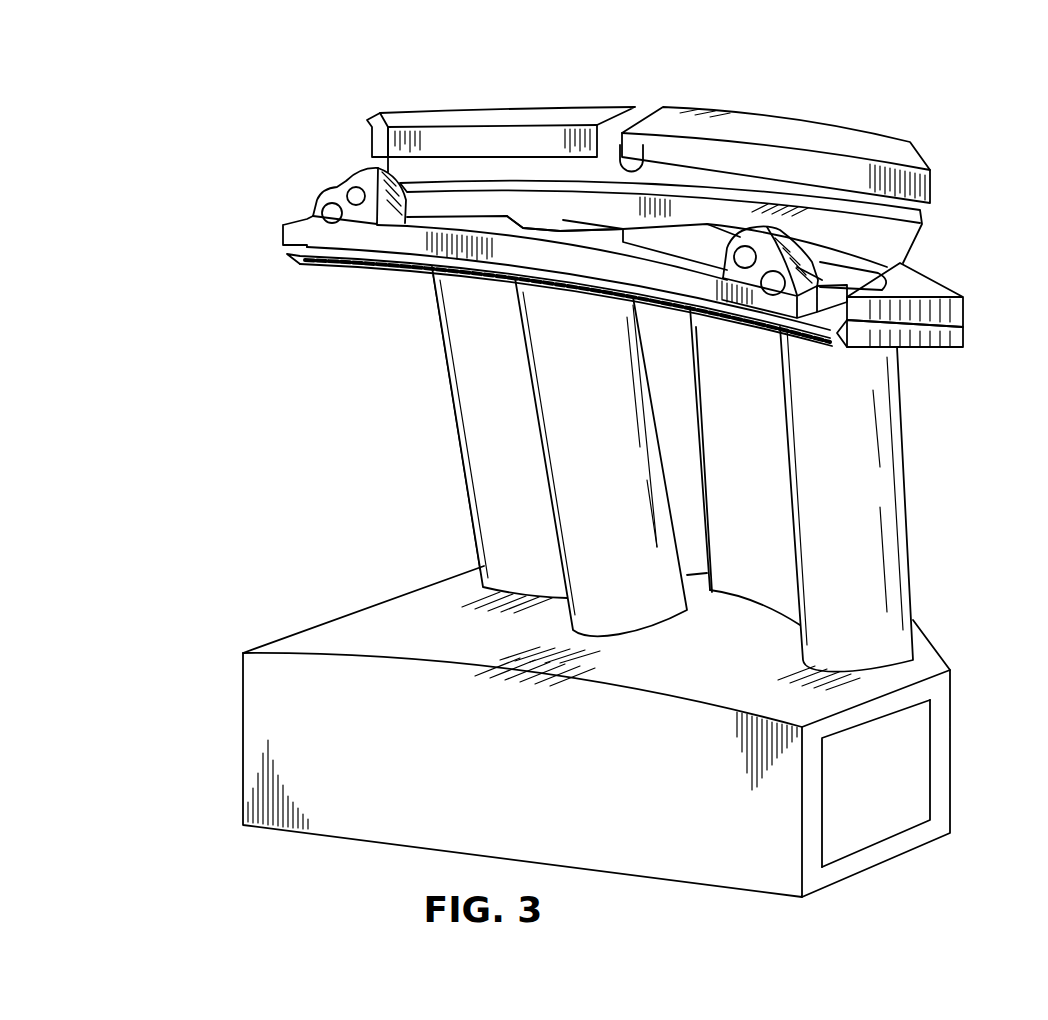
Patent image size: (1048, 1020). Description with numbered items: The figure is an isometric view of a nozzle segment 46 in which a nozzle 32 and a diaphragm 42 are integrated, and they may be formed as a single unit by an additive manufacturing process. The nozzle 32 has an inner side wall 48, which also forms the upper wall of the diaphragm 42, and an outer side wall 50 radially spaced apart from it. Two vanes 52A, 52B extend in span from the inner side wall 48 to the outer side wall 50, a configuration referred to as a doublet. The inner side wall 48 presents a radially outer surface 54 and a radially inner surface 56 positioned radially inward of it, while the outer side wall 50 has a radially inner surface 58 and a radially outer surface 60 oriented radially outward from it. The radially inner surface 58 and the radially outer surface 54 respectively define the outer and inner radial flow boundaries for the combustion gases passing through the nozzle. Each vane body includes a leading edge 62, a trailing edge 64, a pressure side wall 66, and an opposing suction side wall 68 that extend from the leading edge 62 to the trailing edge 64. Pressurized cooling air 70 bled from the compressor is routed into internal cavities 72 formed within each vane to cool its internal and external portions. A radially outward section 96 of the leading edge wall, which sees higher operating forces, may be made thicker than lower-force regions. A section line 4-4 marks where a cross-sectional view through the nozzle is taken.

The diaphragm 42 is at (230, 731).
The nozzle segment 46 is at (393, 78).
The nozzle 32 is at (316, 183).
The outer side wall 50 is at (290, 236).
The radially inner surface 58 is at (352, 269).
The radially outer surface 60 is at (910, 282).
The cooling air 70 is at (559, 210).
The internal cavities 72 is at (519, 196).
The vane 52A is at (444, 391).
The vane 52B is at (912, 470).
The radially outer surface 54 is at (342, 638).
The inner side wall 48 is at (932, 688).
The radially inner surface 56 is at (884, 716).
The radially outward section 96 is at (906, 810).
The leading edge 62 is at (630, 535).
The trailing edge 64 is at (455, 428).
The pressure side wall 66 is at (515, 440).
The suction side wall 68 is at (630, 345).
The section line 4- 4 is at (430, 338).